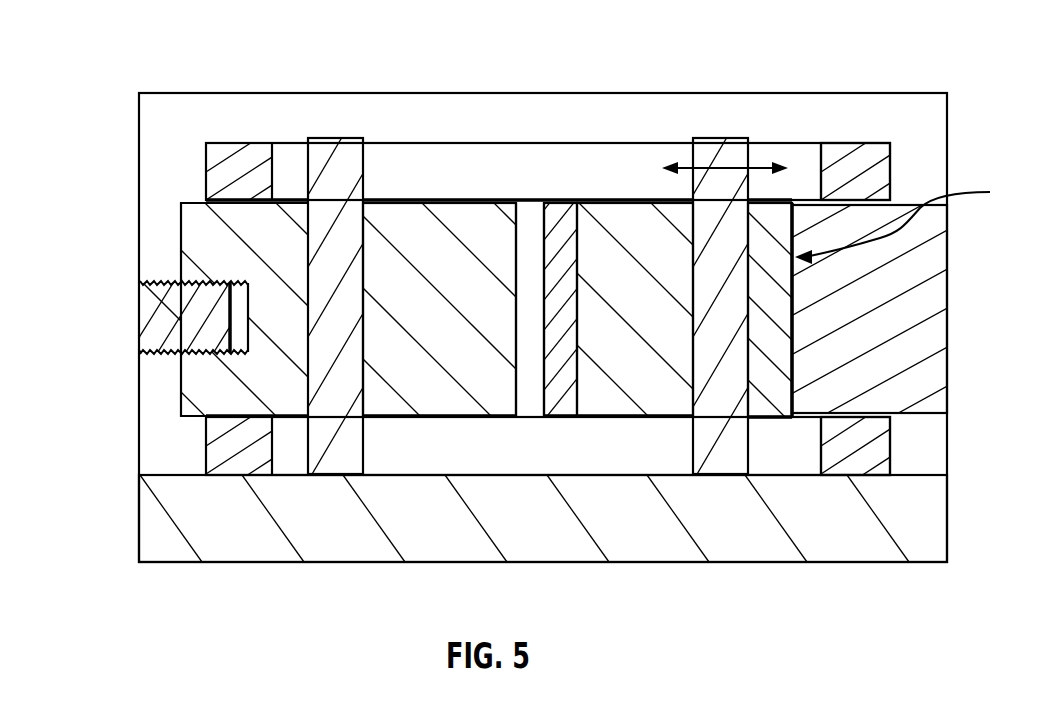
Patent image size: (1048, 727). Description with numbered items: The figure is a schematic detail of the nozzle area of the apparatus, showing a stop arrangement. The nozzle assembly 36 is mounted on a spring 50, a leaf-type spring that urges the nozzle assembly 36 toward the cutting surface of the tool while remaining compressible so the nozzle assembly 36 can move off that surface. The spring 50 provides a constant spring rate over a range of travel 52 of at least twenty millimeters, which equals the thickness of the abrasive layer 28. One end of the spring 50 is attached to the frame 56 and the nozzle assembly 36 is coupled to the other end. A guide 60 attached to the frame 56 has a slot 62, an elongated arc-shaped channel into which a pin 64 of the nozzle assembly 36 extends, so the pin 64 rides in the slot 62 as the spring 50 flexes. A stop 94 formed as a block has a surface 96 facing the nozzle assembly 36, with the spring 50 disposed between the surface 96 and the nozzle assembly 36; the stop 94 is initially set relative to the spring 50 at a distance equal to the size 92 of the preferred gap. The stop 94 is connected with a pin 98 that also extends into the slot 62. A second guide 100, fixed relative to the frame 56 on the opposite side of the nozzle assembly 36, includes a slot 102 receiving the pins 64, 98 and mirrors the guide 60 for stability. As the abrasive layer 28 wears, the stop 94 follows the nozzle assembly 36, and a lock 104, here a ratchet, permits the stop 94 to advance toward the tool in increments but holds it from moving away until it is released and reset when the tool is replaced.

The abrasive layer 28 is at (925, 312).
The nozzle assembly 36 is at (909, 221).
The spring 50 is at (570, 408).
The range of travel 52 is at (760, 160).
The frame 56 is at (615, 532).
The guide 60 is at (863, 148).
The slot 62 is at (428, 172).
The pin 64 is at (707, 142).
The size 92 is at (532, 228).
The stop 94 is at (424, 338).
The surface 96 is at (517, 388).
The pin 98 is at (348, 143).
The second guide 100 is at (892, 450).
The slot 102 is at (775, 457).
The lock 104 is at (147, 355).